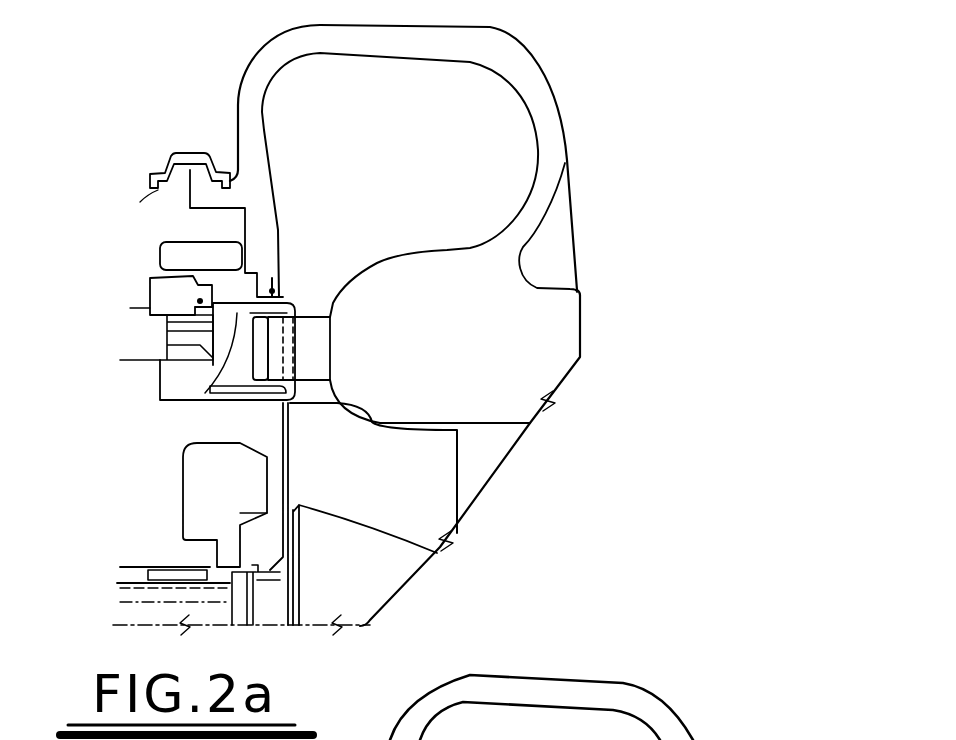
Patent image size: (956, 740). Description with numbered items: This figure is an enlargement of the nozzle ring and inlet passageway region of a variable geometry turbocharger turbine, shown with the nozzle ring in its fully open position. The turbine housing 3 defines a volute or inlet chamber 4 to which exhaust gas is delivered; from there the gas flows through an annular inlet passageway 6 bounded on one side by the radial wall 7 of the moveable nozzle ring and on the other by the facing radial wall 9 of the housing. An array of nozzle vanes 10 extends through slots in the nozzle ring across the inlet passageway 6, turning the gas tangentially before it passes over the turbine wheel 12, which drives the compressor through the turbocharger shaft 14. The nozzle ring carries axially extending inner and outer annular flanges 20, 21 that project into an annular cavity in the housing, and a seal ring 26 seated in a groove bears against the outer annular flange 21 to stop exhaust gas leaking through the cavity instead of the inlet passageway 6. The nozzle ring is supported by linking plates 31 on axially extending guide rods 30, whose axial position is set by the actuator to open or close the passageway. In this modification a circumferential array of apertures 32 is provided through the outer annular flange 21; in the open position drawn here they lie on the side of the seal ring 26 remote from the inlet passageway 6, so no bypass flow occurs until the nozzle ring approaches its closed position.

The turbine housing 3 is at (473, 45).
The inlet chamber 4 is at (320, 87).
The annular inlet passageway 6 is at (303, 300).
The radial wall 7 is at (292, 353).
The facing radial wall 9 is at (333, 353).
The nozzle vanes 10 is at (313, 333).
The turbine wheel 12 is at (400, 473).
The turbocharger shaft 14 is at (133, 617).
The inner annular flange 20 is at (240, 393).
The outer annular flange 21 is at (197, 287).
The seal ring 26 is at (273, 273).
The guide rods 30 is at (143, 347).
The linking plates 31 is at (195, 305).
The apertures 32 is at (213, 390).